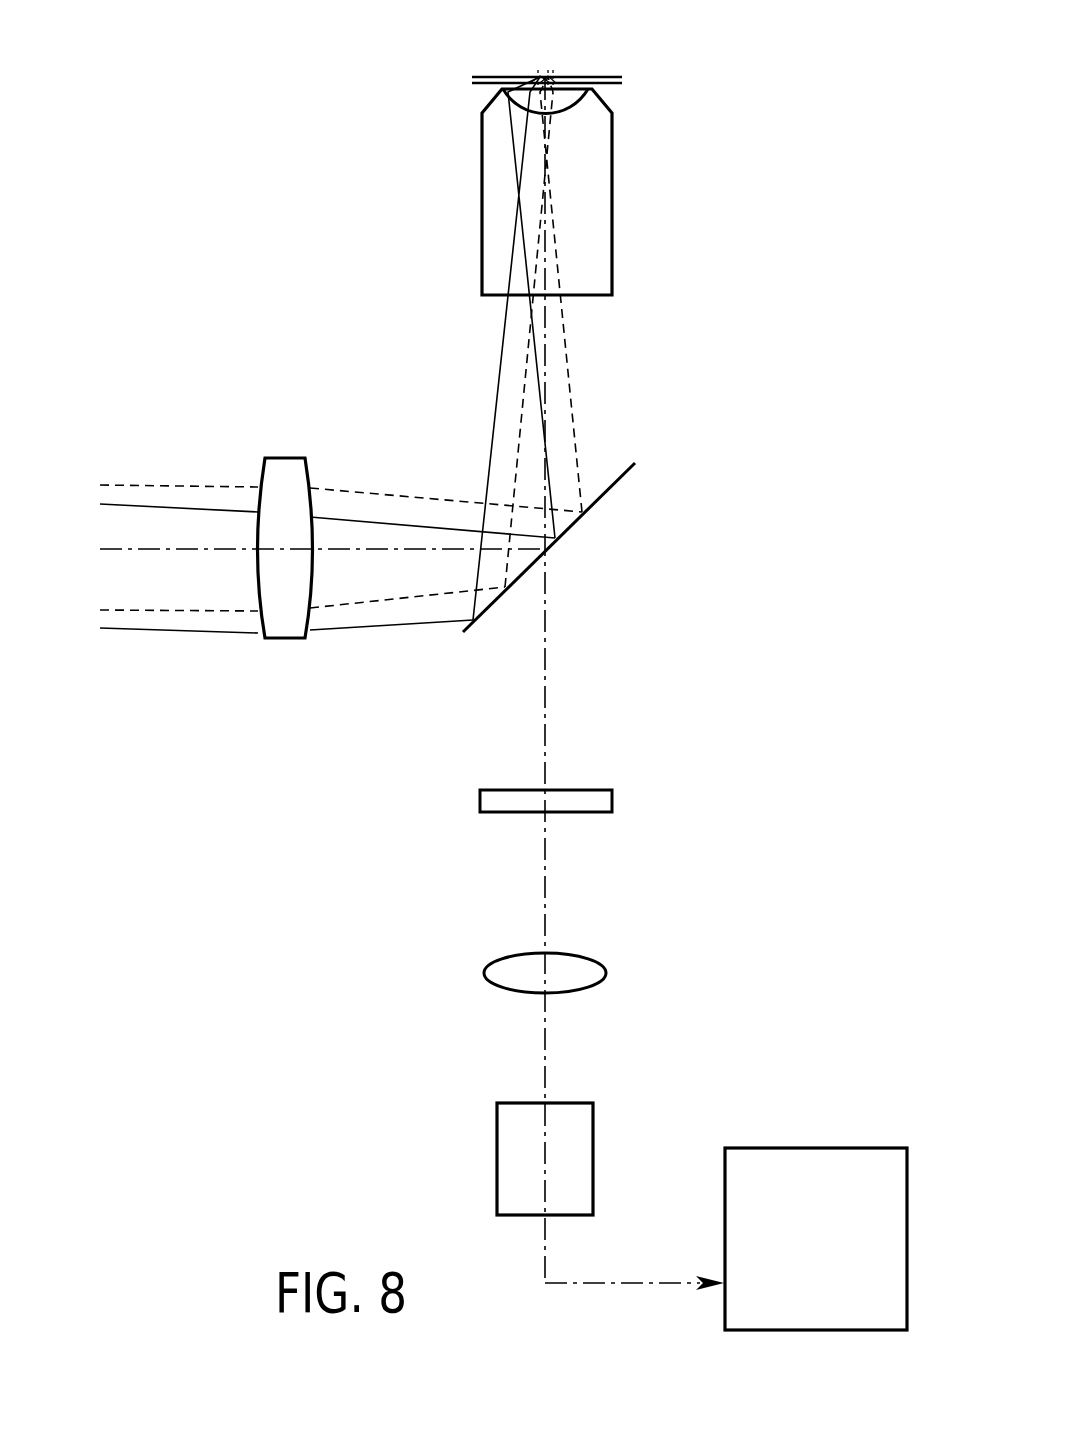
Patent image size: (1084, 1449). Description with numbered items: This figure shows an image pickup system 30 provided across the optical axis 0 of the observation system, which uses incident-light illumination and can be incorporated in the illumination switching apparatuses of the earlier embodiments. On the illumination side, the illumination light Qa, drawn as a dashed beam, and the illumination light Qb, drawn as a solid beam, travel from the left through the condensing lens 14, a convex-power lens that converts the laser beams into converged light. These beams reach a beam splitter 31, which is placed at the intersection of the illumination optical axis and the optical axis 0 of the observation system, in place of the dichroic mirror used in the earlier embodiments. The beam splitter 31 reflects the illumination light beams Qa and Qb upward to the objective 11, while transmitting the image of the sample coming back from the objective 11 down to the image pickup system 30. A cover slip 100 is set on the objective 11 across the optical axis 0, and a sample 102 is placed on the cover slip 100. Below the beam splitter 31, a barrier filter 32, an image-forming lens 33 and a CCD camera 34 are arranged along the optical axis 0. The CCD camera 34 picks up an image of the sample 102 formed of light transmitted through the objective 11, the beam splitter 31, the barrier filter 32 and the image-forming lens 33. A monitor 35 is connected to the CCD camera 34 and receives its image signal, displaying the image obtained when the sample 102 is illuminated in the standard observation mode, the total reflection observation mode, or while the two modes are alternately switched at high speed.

The optical axis 0 is at (547, 683).
The cover slip 100 is at (472, 81).
The sample 102 is at (549, 76).
The objective 11 is at (482, 200).
The condensing lens 14 is at (292, 640).
The image pickup system 30 is at (693, 730).
The beam splitter 31 is at (608, 490).
The barrier filter 32 is at (613, 797).
The image-forming lens 33 is at (606, 973).
The CCD camera 34 is at (593, 1115).
The monitor 35 is at (840, 1148).
The illumination light Qa is at (210, 485).
The illumination light Qb is at (142, 504).